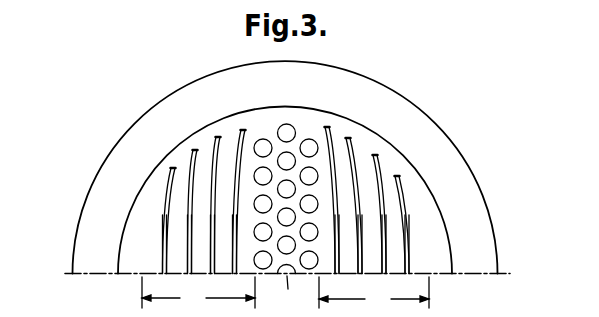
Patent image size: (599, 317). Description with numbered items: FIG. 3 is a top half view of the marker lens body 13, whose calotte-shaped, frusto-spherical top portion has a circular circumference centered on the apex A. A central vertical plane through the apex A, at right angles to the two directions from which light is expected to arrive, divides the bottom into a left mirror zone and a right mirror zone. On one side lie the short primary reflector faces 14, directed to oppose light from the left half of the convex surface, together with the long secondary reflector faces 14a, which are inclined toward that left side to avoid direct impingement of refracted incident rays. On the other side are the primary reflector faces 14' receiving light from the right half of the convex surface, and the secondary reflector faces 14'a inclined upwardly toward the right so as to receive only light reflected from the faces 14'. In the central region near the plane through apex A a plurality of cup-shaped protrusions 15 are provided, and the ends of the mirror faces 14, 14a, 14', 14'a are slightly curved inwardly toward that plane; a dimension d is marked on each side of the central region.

The lens body 13 is at (445, 180).
The primary reflector faces 14 is at (384, 176).
The secondary reflector faces 14a is at (347, 218).
The primary reflector faces 14' is at (184, 172).
The secondary reflector faces 14'a is at (145, 201).
The cup-shaped protrusions 15 is at (288, 133).
The apex A is at (290, 293).
The distance d is at (285, 293).